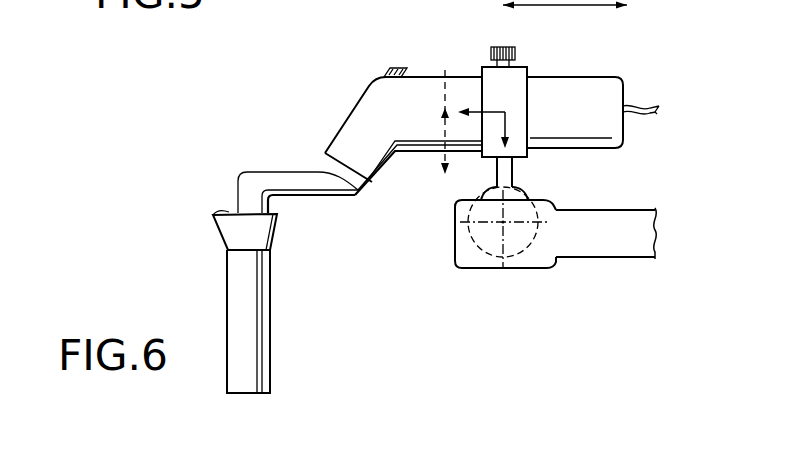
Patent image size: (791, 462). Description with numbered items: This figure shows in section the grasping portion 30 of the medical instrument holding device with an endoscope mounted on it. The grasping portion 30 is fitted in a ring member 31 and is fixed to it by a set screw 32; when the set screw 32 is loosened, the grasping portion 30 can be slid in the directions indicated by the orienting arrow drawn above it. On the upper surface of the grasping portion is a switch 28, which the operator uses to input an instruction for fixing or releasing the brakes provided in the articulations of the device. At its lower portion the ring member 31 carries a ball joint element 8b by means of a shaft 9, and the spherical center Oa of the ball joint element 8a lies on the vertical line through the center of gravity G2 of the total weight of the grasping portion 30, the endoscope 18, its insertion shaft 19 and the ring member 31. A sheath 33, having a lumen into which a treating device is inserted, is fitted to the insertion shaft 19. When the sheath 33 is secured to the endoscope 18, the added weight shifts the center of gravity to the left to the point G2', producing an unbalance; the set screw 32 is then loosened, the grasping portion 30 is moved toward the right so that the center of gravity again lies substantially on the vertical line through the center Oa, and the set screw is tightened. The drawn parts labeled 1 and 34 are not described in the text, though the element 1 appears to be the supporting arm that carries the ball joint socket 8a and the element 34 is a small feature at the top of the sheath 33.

The operating rod 1 is at (632, 268).
The ball joint element 8a is at (465, 257).
The ball joint element 8b is at (517, 192).
The shaft 9 is at (497, 170).
The endoscope 18 is at (262, 158).
The insertion shaft 19 is at (288, 207).
The switch 28 is at (392, 67).
The grasping portion 30 is at (417, 73).
The ring member 31 is at (512, 78).
The set screw 32 is at (497, 45).
The sheath 33 is at (228, 232).
The flange 34 is at (211, 204).
The center of gravity G2 is at (515, 119).
The shifted center of gravity G2' is at (451, 105).
The spherical center Oa is at (512, 227).